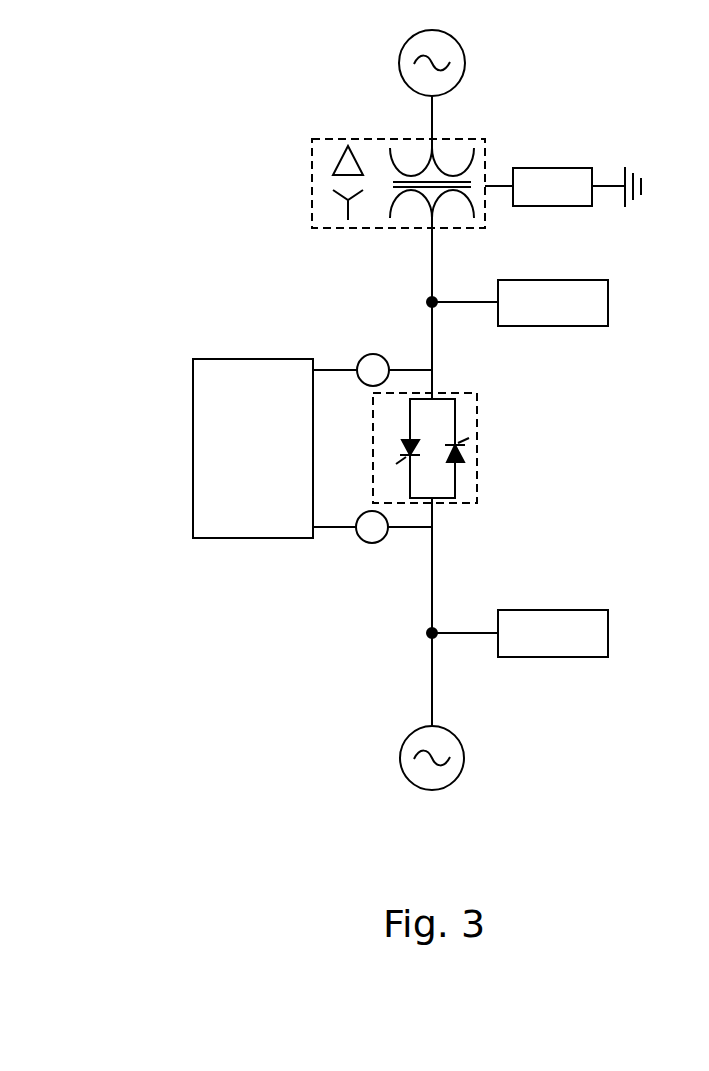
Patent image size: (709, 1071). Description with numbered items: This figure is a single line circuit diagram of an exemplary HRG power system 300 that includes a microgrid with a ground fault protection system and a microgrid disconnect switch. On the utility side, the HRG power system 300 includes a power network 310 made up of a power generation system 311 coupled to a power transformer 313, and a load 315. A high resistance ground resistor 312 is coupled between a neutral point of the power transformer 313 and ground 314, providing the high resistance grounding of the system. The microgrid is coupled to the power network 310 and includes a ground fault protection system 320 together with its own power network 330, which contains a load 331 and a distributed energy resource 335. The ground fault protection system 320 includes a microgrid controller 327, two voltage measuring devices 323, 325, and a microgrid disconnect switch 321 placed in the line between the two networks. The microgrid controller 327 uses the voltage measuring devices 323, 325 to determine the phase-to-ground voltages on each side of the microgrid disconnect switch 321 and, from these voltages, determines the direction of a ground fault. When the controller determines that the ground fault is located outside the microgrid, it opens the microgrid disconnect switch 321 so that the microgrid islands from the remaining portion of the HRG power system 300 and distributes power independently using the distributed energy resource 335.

The HRG power system 300 is at (162, 113).
The power network 310 is at (312, 290).
The power generation system 311 is at (466, 60).
The high resistance ground resistor 312 is at (584, 168).
The power transformer 313 is at (470, 138).
The ground 314 is at (645, 180).
The load 315 is at (578, 280).
The ground fault protection system 320 is at (562, 452).
The microgrid disconnect switch 321 is at (456, 408).
The voltage measuring device 323 is at (366, 354).
The voltage measuring device 325 is at (368, 543).
The microgrid controller 327 is at (193, 380).
The power network 330 is at (312, 640).
The load 331 is at (578, 610).
The distributed energy resource 335 is at (465, 756).